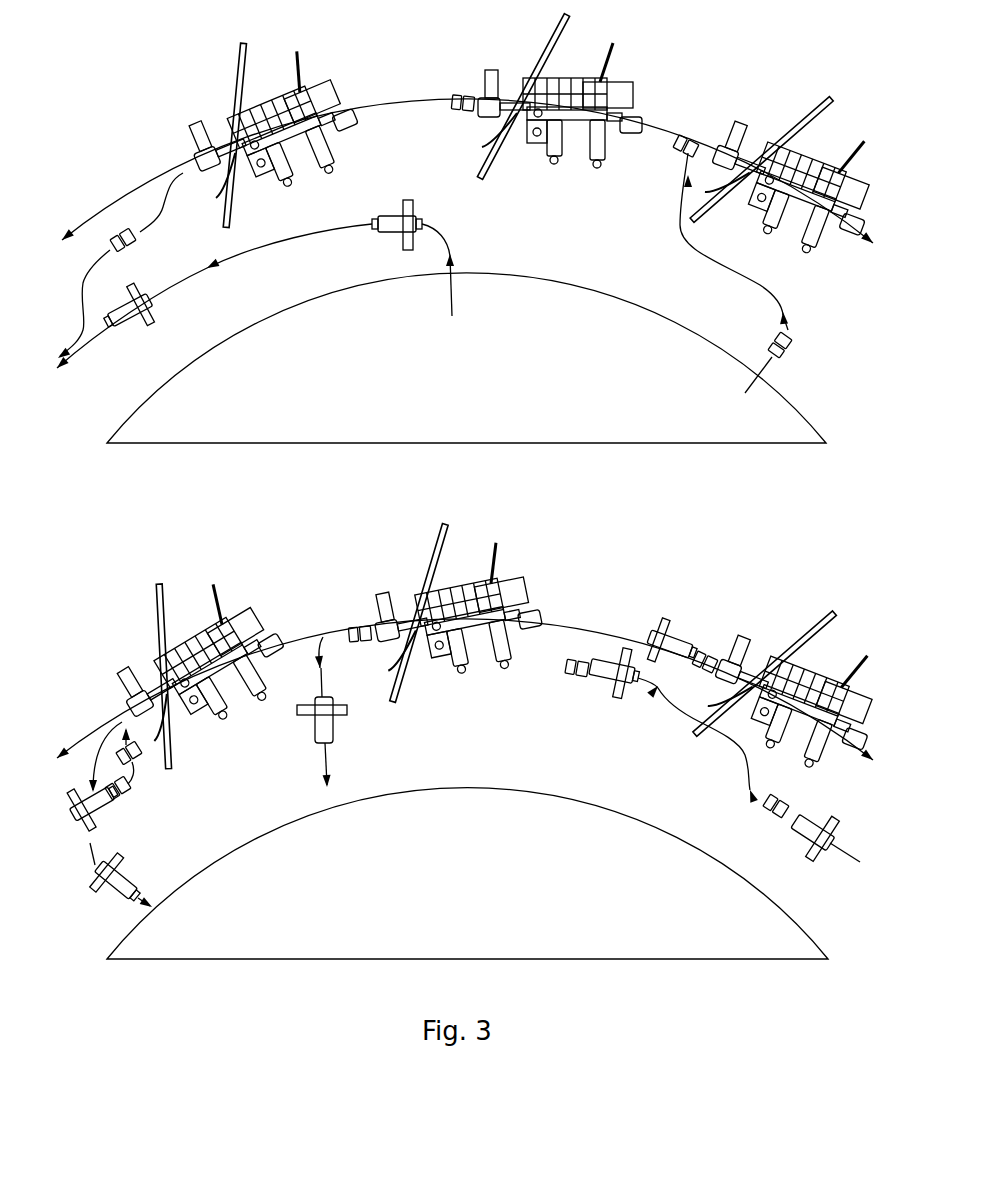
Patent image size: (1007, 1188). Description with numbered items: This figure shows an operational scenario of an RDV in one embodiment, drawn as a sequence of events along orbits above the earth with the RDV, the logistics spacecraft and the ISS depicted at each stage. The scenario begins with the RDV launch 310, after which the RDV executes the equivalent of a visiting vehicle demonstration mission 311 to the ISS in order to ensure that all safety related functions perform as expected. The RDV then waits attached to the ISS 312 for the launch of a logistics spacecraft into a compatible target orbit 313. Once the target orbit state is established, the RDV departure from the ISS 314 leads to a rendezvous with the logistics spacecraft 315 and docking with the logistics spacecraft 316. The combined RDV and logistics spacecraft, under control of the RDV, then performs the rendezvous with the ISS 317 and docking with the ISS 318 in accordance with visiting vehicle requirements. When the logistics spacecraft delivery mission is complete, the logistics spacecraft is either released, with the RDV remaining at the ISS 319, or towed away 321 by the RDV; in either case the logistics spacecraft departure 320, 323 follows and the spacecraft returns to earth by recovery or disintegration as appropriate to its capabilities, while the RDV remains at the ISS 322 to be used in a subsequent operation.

The RDV launch 310 is at (791, 355).
The visiting vehicle demonstration mission 311 is at (711, 238).
The RDV waiting attached to ISS 312 is at (446, 92).
The logistics spacecraft launch into target orbit 313 is at (435, 258).
The RDV departure from ISS 314 is at (119, 267).
The rendezvous with logistics spacecraft 315 is at (213, 297).
The docking with logistics spacecraft 316 is at (759, 775).
The combined vehicle rendezvous with ISS 317 is at (613, 678).
The combined vehicle docking with ISS 318 is at (681, 638).
The logistics spacecraft release with RDV remaining at ISS 319 is at (341, 628).
The logistics spacecraft departure after release 320 is at (335, 712).
The towing away of logistics spacecraft 321 is at (94, 778).
The RDV remaining at ISS after towing 322 is at (142, 757).
The logistics spacecraft departure after towing 323 is at (126, 878).